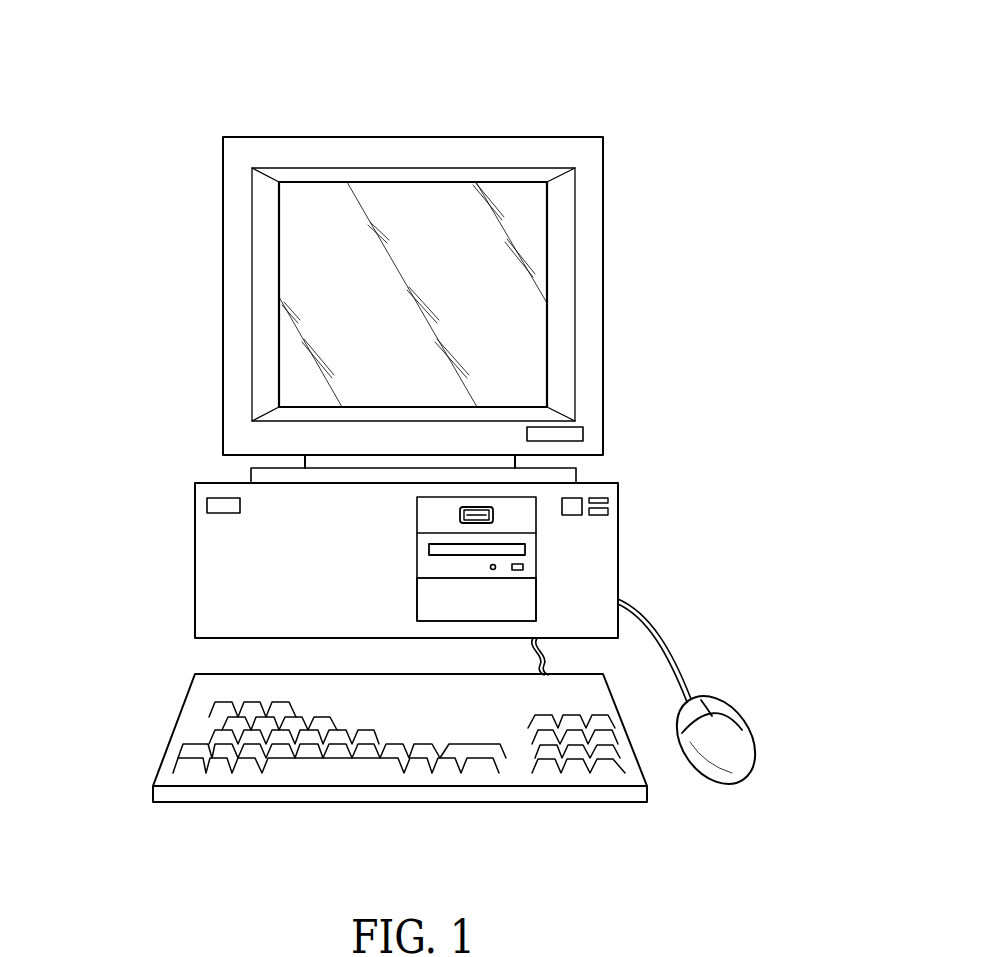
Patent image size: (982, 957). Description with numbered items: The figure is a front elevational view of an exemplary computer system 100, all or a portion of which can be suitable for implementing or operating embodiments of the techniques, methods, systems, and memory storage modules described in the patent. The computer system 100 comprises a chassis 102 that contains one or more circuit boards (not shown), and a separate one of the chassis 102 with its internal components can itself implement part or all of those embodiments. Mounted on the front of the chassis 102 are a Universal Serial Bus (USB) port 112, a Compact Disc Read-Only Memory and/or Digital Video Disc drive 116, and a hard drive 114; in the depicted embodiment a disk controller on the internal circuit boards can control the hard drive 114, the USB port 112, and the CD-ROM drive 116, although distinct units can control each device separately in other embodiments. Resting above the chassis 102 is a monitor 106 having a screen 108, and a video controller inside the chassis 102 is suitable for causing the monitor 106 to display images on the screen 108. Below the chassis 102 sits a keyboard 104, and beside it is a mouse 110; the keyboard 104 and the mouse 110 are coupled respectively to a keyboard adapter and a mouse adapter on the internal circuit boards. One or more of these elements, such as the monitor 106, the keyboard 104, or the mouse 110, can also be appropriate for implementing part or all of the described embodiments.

The computer system 100 is at (595, 113).
The chassis 102 is at (195, 563).
The keyboard 104 is at (177, 724).
The monitor 106 is at (299, 137).
The screen 108 is at (327, 300).
The mouse 110 is at (738, 732).
The Universal Serial Bus (USB) port 112 is at (493, 509).
The hard drive 114 is at (527, 598).
The CD-ROM and/or DVD drive 116 is at (527, 555).